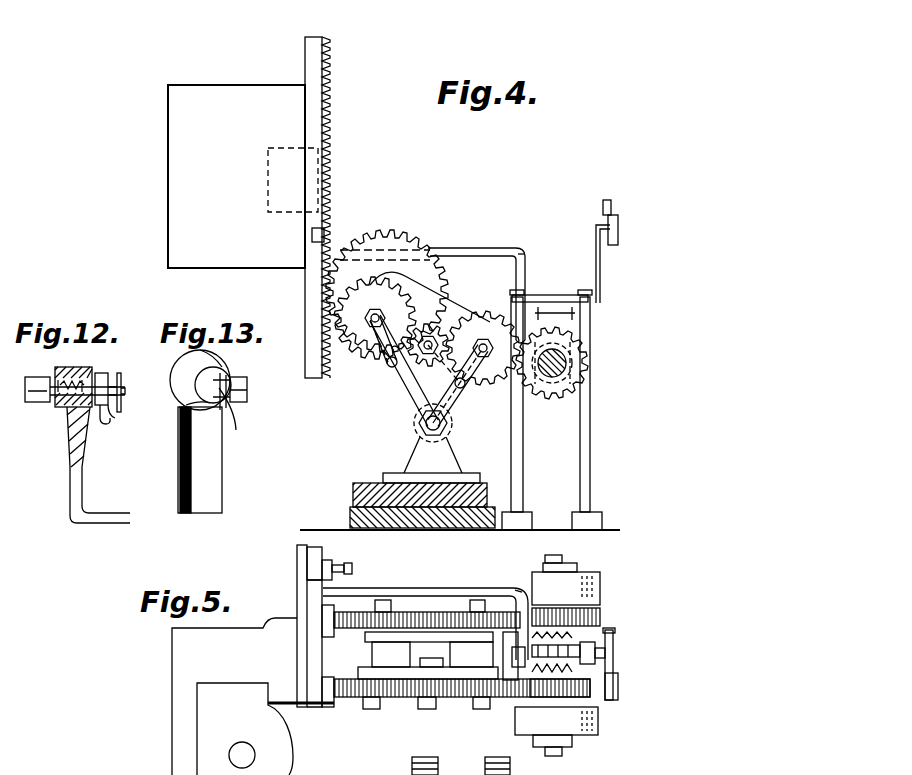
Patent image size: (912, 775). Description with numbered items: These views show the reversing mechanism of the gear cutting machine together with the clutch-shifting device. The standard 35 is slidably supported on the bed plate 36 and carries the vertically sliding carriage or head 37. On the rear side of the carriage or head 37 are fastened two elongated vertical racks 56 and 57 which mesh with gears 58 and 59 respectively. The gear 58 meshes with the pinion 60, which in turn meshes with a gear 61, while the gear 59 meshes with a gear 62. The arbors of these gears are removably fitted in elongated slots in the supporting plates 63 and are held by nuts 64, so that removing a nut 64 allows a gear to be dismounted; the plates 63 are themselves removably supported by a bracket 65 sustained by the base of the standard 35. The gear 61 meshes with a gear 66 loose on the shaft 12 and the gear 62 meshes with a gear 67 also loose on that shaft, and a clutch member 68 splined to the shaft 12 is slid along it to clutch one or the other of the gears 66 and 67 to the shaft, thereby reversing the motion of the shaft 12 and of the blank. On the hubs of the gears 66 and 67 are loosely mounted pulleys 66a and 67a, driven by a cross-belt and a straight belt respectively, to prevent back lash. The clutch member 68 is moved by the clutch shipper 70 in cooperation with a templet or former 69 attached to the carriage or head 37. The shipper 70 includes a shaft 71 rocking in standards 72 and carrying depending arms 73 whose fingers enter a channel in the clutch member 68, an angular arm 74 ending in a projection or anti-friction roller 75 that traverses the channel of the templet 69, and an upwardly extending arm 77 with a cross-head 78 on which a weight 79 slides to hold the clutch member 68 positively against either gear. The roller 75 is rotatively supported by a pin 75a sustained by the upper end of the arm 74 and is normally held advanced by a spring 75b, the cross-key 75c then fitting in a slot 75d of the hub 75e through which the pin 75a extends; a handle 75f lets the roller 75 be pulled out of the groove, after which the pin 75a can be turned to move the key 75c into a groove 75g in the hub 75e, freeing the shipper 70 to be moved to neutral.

In FIG. 4, the shaft 12 is at (566, 368).
In FIG. 5, the shaft 12 is at (563, 559).
In FIG. 4, the standard 35 is at (362, 498).
In FIG. 5, the standard 35 is at (245, 729).
In FIG. 4, the bed plate 36 is at (350, 521).
In FIG. 4, the carriage or head 37 is at (243, 176).
In FIG. 5, the carriage or head 37 is at (234, 696).
In FIG. 4, the rack 56 is at (331, 128).
In FIG. 5, the rack 56 is at (330, 708).
In FIG. 5, the rack 57 is at (330, 612).
In FIG. 4, the gear 58 is at (375, 318).
In FIG. 5, the gear 58 is at (345, 699).
In FIG. 4, the gear 59 is at (390, 238).
In FIG. 5, the gear 59 is at (396, 634).
In FIG. 4, the pinion 60 is at (395, 371).
In FIG. 5, the pinion 60 is at (410, 683).
In FIG. 4, the gear 61 is at (461, 386).
In FIG. 5, the gear 61 is at (468, 683).
In FIG. 4, the gear 62 is at (483, 318).
In FIG. 5, the gear 62 is at (458, 612).
In FIG. 4, the supporting plates 63 is at (432, 323).
In FIG. 5, the supporting plates 63 is at (430, 628).
In FIG. 4, the nuts 64 is at (368, 337).
In FIG. 5, the nuts 64 is at (478, 610).
In FIG. 4, the bracket 65 is at (412, 456).
In FIG. 4, the gear 66 is at (582, 360).
In FIG. 5, the gear 66 is at (590, 699).
In FIG. 5, the pulley 66a is at (582, 736).
In FIG. 5, the gear 67 is at (600, 614).
In FIG. 5, the pulley 67a is at (600, 588).
In FIG. 5, the clutch member 68 is at (578, 637).
In FIG. 5, the templet, former, or pattern 69 is at (322, 564).
In FIG. 4, the clutch shipper 70 is at (476, 284).
In FIG. 5, the clutch shipper 70 is at (425, 612).
In FIG. 4, the shaft 71 is at (553, 295).
In FIG. 4, the standards 72 is at (523, 463).
In FIG. 5, the standards 72 is at (613, 656).
In FIG. 4, the depending arms 73 is at (555, 321).
In FIG. 4, the angular arm 74 is at (524, 252).
In FIG. 12, the angular arm 74 is at (70, 545).
In FIG. 13, the angular arm 74 is at (180, 482).
In FIG. 5, the angular arm 74 is at (518, 590).
In FIG. 4, the projection or anti-friction roller 75 is at (324, 236).
In FIG. 12, the projection or anti-friction roller 75 is at (38, 378).
In FIG. 5, the projection or anti-friction roller 75 is at (307, 566).
In FIG. 12, the pin 75a is at (110, 387).
In FIG. 12, the spring 75b is at (60, 404).
In FIG. 12, the cross-key 75c is at (104, 424).
In FIG. 12, the slot 75d is at (114, 404).
In FIG. 13, the slot 75d is at (236, 430).
In FIG. 12, the hub 75e is at (70, 447).
In FIG. 13, the hub 75e is at (226, 371).
In FIG. 12, the handle 75f is at (122, 393).
In FIG. 13, the groove 75g is at (247, 391).
In FIG. 4, the upwardly extending arm 77 is at (600, 262).
In FIG. 5, the cross-head 78 is at (600, 651).
In FIG. 5, the weight 79 is at (618, 688).